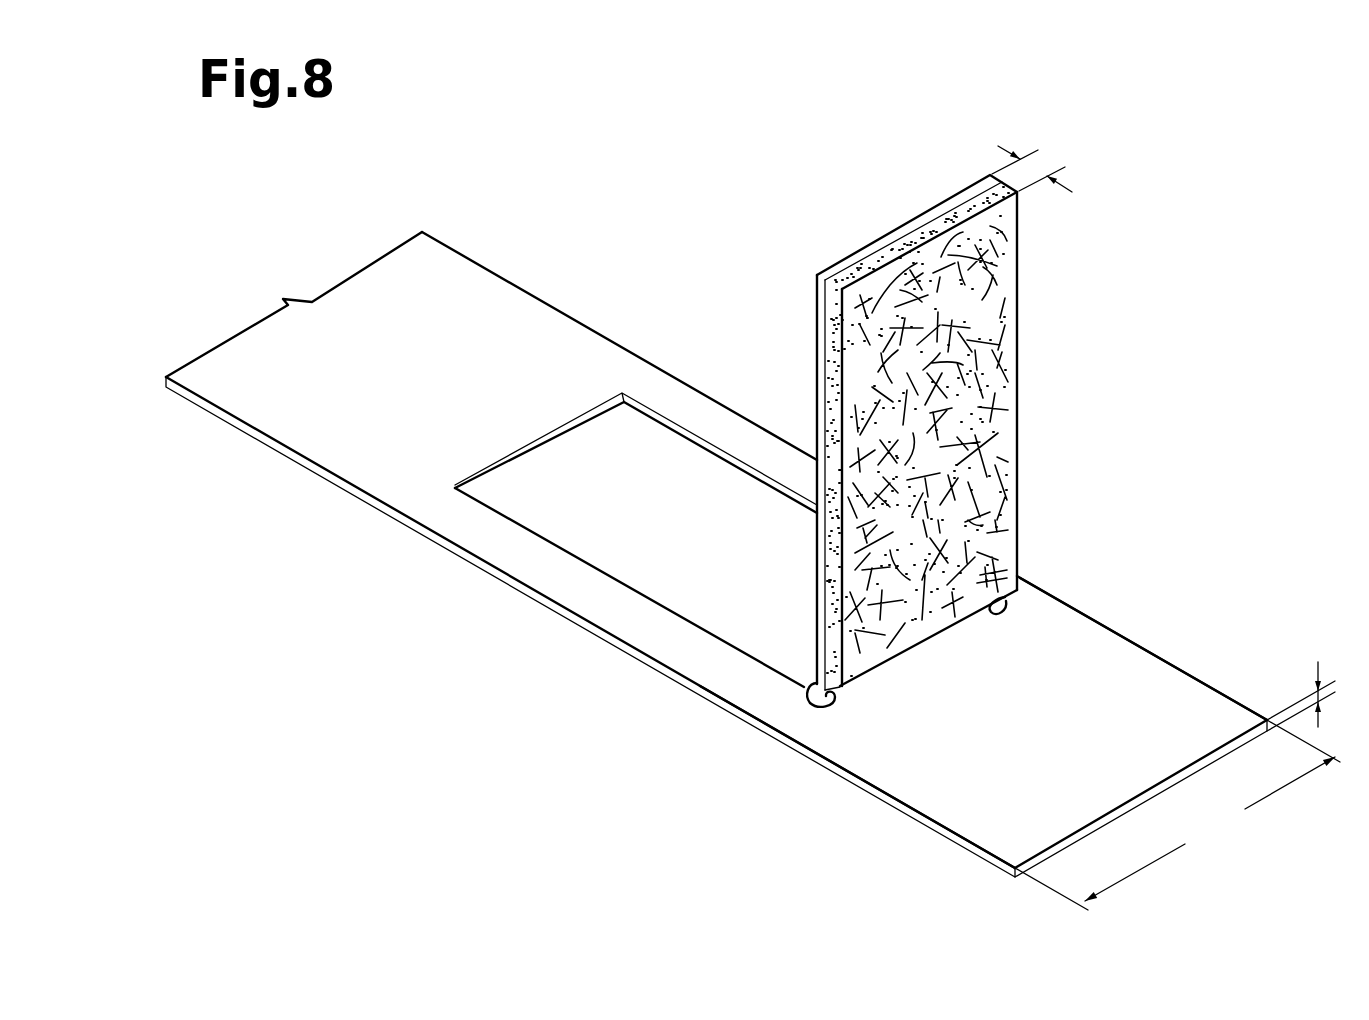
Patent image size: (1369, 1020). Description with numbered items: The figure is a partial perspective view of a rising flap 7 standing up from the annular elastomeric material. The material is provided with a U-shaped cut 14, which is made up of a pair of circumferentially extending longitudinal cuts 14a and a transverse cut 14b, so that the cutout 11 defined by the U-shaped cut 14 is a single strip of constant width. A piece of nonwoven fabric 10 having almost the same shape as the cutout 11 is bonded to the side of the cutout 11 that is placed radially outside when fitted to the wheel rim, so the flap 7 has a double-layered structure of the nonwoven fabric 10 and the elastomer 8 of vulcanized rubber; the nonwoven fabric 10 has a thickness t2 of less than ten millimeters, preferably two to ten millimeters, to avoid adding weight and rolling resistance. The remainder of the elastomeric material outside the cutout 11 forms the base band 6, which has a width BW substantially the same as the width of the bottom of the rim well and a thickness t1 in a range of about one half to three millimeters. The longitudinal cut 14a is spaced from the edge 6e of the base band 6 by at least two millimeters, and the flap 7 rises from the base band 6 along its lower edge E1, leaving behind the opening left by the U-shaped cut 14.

The base band 6 is at (716, 575).
The edge 6e is at (1050, 593).
The flap 7 is at (953, 487).
The elastomer 8 is at (1003, 431).
The nonwoven fabric 10 is at (977, 318).
The cutout 11 is at (905, 210).
The U-shaped cut 14 is at (572, 583).
The longitudinal cut 14a is at (533, 530).
The transverse cut 14b is at (533, 453).
The edge of the flap E1 is at (912, 655).
The thickness of the base band t1 is at (1311, 696).
The thickness of the nonwoven fabric t2 is at (1032, 165).
The width of the base band BW is at (1177, 815).